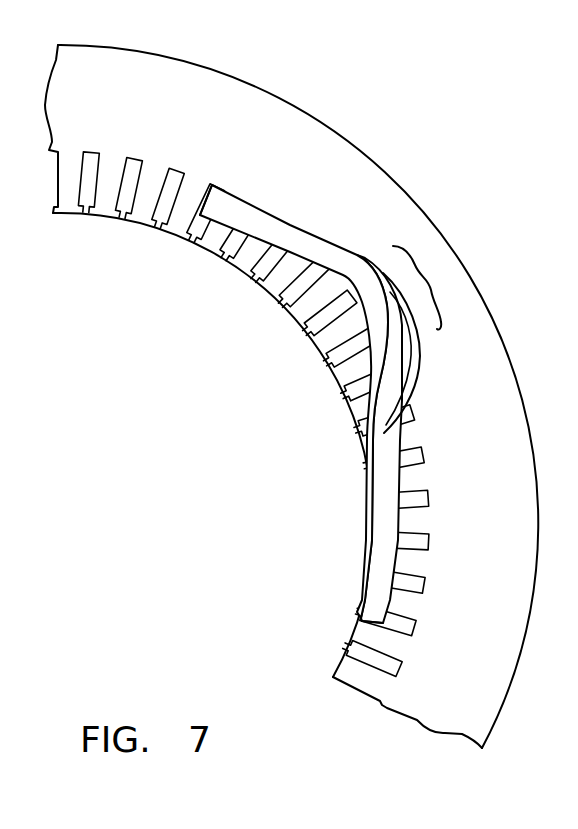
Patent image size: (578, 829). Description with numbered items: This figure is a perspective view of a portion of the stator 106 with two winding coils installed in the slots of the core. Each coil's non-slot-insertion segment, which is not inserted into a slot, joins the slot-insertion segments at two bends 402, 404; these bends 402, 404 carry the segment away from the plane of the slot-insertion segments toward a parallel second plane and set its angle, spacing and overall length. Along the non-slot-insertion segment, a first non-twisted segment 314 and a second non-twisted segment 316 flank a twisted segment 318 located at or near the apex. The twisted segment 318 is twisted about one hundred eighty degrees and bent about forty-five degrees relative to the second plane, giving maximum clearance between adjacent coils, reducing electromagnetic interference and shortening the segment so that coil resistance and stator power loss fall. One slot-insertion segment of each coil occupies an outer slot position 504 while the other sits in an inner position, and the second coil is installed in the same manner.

The stator 106 is at (437, 692).
The first non-twisted segment 314 is at (320, 246).
The second non-twisted segment 316 is at (388, 488).
The twisted segment 318 is at (430, 277).
The bend 402 is at (217, 202).
The bend 404 is at (362, 622).
The outer slot position 504 is at (214, 186).